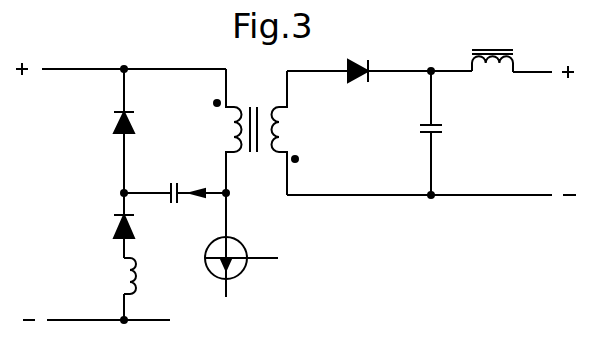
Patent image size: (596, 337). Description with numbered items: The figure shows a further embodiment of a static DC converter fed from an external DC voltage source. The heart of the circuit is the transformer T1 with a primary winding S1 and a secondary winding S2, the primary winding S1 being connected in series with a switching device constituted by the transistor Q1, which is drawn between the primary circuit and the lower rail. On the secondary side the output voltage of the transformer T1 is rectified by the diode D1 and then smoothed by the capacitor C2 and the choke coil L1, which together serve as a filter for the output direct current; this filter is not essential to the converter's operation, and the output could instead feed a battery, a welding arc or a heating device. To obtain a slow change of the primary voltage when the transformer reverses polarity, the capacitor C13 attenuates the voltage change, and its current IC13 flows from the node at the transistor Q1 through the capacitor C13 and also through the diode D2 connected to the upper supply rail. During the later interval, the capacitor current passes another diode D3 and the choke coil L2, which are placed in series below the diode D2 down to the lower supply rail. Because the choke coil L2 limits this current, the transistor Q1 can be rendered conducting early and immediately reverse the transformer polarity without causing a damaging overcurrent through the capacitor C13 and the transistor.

The diode D1 is at (365, 86).
The diode D2 is at (141, 123).
The diode D3 is at (110, 227).
The capacitor C2 is at (442, 133).
The capacitor C13 is at (175, 207).
The current through capacitor C13 IC13 is at (206, 175).
The choke coil L1 is at (492, 75).
The choke coil L2 is at (115, 276).
The transformer T1 is at (258, 132).
The primary winding S1 is at (223, 131).
The secondary winding S2 is at (292, 133).
The transistor Q1 is at (241, 245).